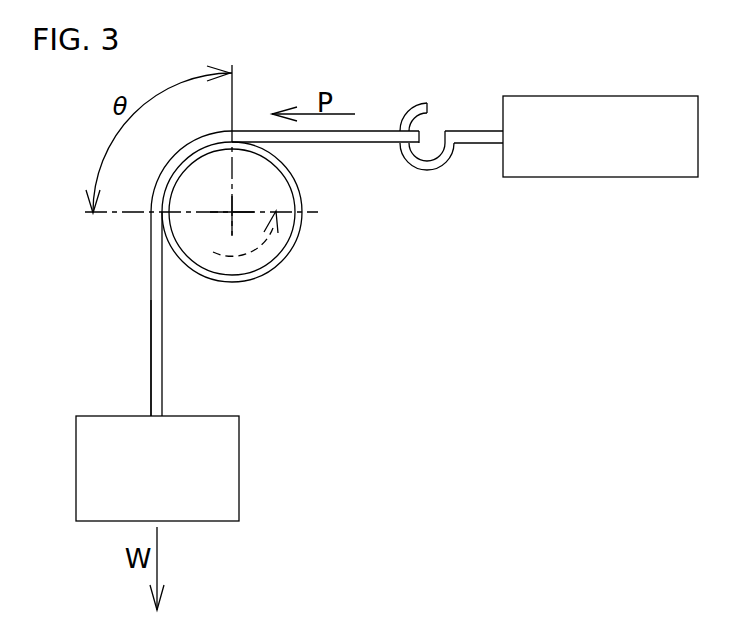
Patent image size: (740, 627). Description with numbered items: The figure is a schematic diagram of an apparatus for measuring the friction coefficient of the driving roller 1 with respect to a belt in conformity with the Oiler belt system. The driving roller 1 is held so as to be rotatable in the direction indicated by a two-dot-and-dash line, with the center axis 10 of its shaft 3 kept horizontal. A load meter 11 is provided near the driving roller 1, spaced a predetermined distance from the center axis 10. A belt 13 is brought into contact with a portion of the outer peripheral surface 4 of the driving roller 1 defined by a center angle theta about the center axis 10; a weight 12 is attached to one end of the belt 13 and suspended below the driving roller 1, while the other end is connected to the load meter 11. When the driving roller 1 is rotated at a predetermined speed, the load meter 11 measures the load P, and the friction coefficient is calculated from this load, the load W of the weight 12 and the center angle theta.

The driving roller 1 is at (273, 267).
The shaft 3 is at (240, 263).
The outer peripheral surface 4 is at (302, 212).
The center axis 10 is at (232, 212).
The load meter 11 is at (595, 170).
The weight 12 is at (240, 467).
The belt 13 is at (155, 325).